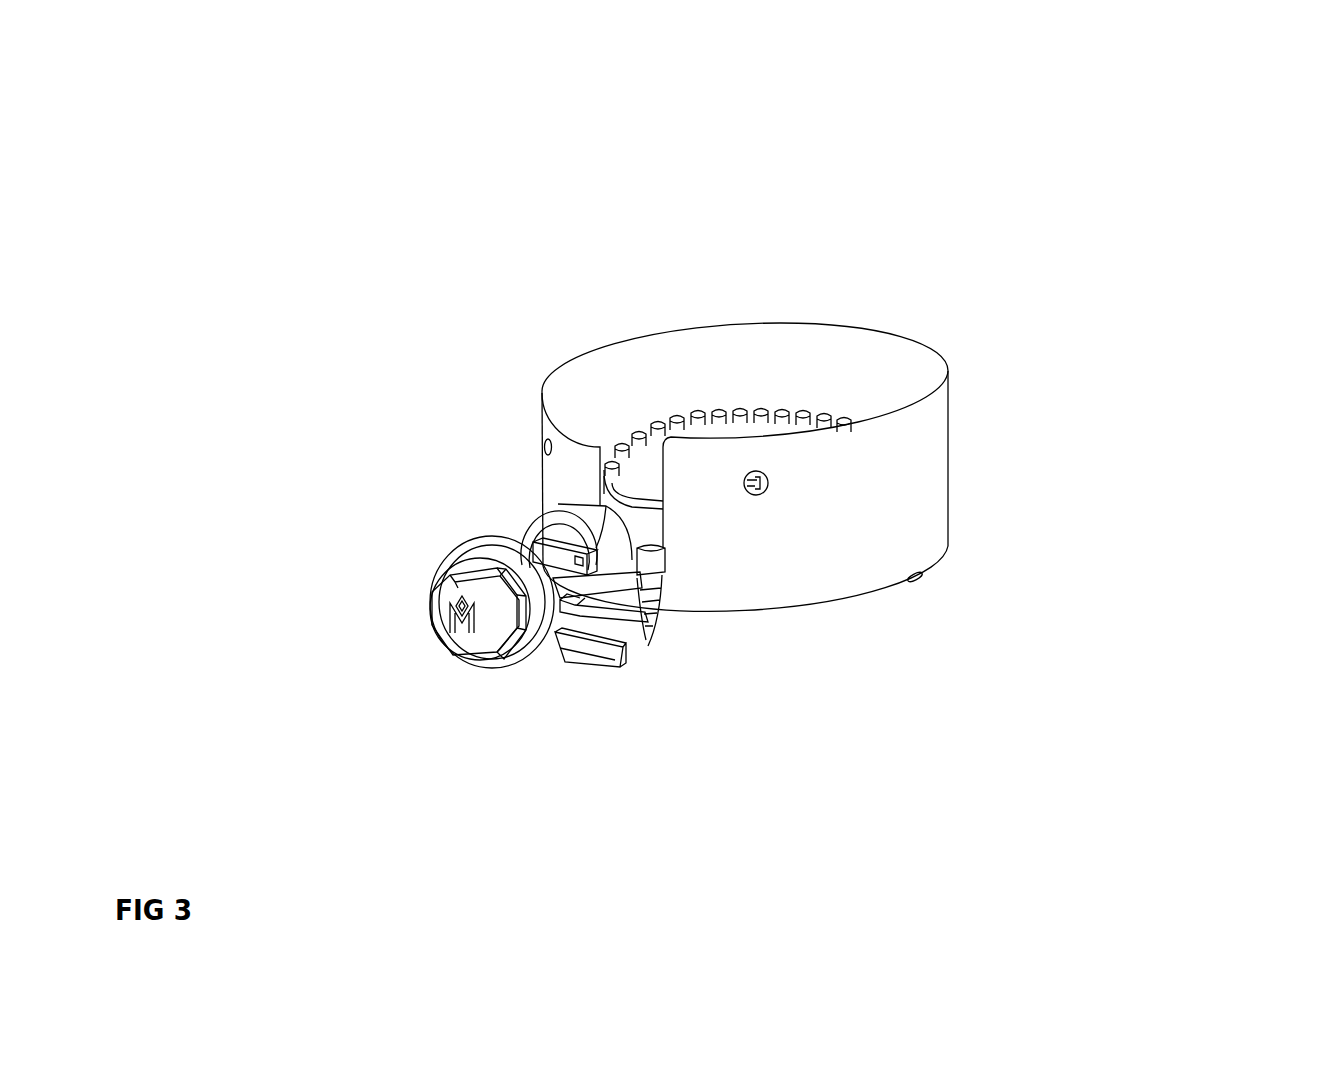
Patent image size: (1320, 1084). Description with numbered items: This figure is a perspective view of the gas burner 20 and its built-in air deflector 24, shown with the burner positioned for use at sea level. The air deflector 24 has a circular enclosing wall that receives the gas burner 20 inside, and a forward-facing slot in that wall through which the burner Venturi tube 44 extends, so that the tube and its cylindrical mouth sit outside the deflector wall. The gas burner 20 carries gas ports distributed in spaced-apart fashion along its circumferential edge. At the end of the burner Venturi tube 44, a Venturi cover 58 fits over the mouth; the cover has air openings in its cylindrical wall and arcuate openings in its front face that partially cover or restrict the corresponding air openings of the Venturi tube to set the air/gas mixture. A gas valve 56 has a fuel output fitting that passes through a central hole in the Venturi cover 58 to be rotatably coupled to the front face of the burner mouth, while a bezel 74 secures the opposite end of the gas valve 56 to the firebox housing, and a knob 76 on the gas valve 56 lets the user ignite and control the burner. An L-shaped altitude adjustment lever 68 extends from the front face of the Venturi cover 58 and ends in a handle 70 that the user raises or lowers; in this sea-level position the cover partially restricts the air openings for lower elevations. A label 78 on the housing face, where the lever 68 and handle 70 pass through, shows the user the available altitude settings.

The gas burner 20 is at (740, 410).
The air deflector 24 is at (900, 470).
The burner Venturi tube 44 is at (627, 513).
The gas valve 56 is at (633, 583).
The Venturi cover 58 is at (592, 535).
The altitude adjustment lever 68 is at (627, 623).
The handle 70 is at (590, 645).
The bezel 74 is at (470, 550).
The knob 76 is at (457, 633).
The label 78 is at (652, 632).